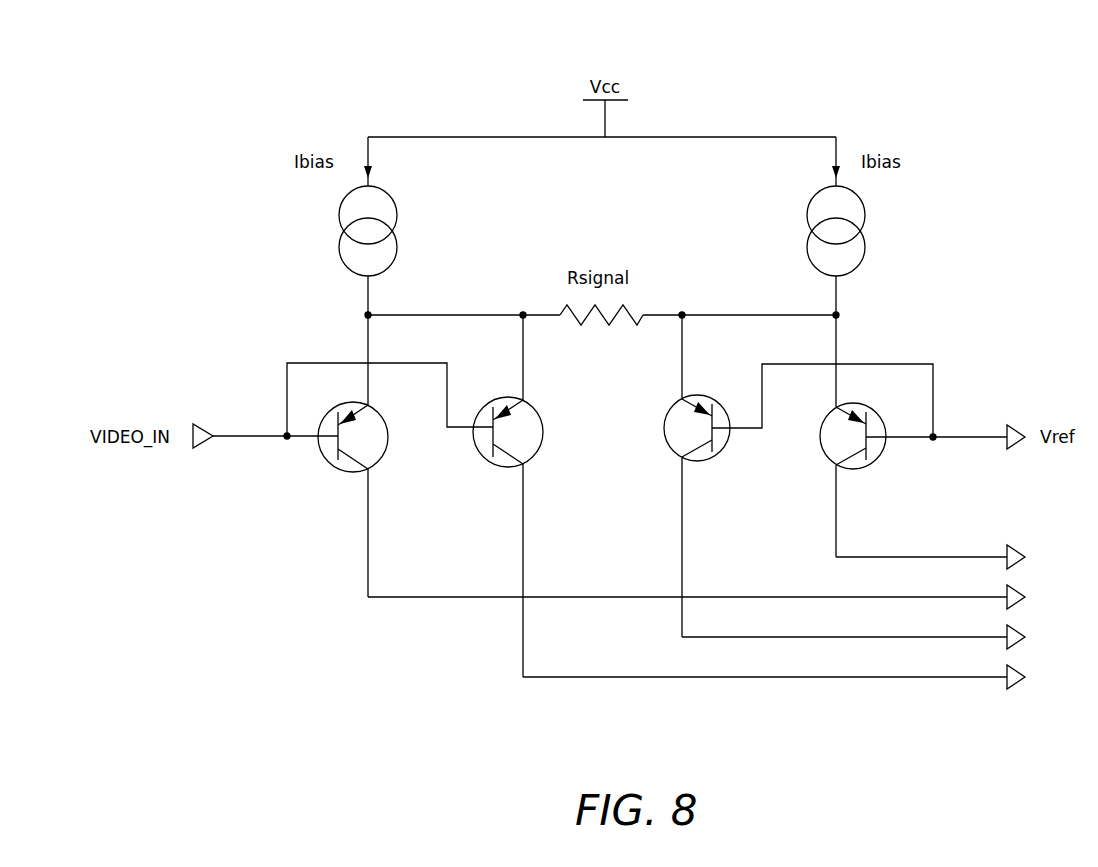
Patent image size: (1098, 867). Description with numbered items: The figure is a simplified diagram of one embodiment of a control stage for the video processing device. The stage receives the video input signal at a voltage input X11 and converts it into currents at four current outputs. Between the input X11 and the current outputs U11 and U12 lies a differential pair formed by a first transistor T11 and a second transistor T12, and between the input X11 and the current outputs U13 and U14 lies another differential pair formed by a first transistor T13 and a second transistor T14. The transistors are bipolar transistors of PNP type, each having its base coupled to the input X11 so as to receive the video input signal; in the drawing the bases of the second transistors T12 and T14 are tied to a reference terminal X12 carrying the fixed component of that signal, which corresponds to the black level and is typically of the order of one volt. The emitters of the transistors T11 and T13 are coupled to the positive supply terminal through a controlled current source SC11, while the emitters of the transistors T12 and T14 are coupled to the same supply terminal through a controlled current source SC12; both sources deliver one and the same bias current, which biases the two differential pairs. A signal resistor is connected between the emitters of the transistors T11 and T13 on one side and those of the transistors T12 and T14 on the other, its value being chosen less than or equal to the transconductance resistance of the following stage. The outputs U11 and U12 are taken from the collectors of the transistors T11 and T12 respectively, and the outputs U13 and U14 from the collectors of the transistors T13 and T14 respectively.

The controlled current source SC11 is at (340, 218).
The controlled current source SC12 is at (865, 218).
The first transistor T11 is at (346, 470).
The second transistor T12 is at (856, 470).
The first transistor T13 is at (502, 466).
The second transistor T14 is at (700, 462).
The voltage input X11 is at (205, 424).
The reference voltage terminal X12 is at (1015, 425).
The current output U11 is at (1015, 545).
The current output U12 is at (1020, 590).
The current output U13 is at (1020, 643).
The current output U14 is at (1015, 689).